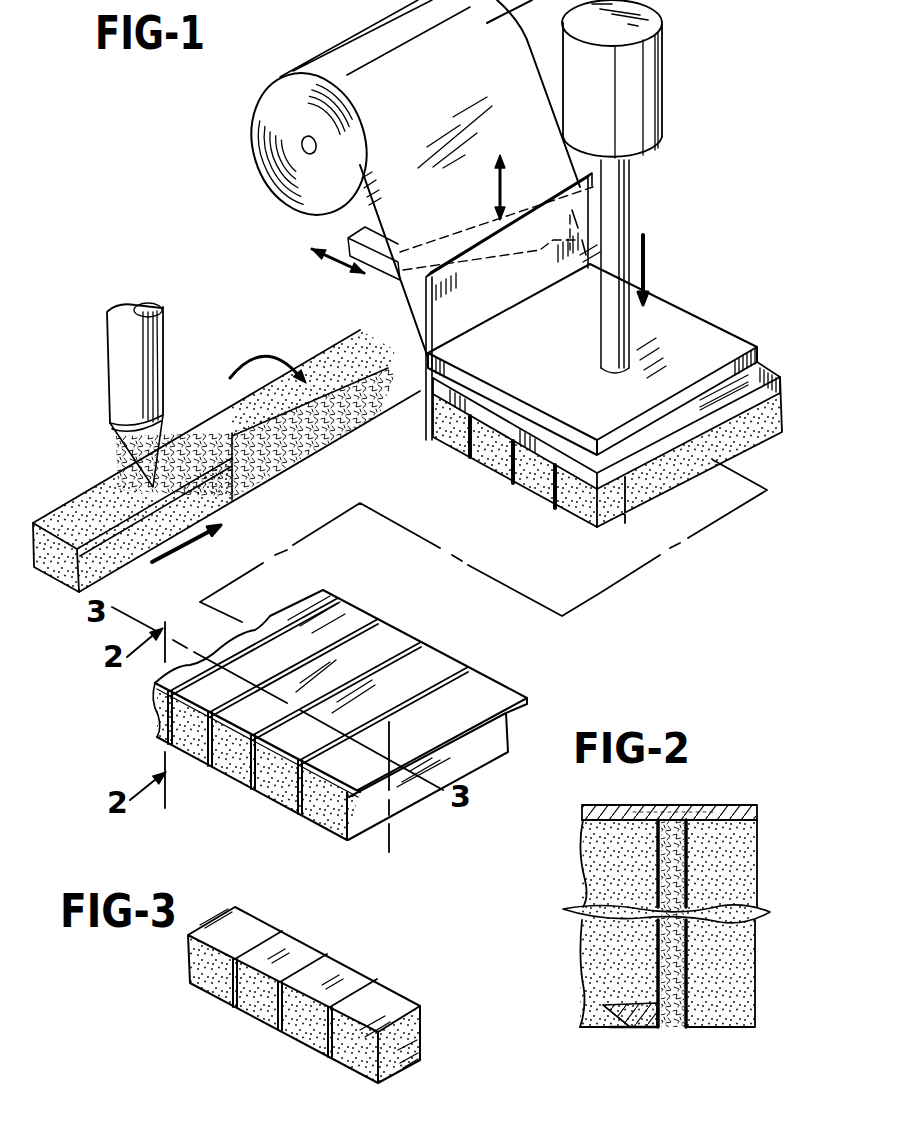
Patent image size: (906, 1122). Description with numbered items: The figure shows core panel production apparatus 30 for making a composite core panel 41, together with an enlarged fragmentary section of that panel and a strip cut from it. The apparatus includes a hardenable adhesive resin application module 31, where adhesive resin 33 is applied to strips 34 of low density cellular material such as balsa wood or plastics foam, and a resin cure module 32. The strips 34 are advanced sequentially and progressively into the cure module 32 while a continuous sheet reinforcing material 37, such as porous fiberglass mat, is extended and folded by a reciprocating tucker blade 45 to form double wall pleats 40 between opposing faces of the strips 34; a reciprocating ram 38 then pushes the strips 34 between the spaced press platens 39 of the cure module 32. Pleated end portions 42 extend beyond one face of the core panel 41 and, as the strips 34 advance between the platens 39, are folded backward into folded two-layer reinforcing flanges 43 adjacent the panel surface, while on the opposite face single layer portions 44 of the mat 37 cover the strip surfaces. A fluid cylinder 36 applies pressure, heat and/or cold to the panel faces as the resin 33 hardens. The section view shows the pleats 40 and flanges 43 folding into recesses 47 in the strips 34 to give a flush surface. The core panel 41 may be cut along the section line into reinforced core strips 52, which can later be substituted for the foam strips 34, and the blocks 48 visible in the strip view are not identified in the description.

In FIG. 1, the core panel production apparatus 30 is at (666, 261).
In FIG. 1, the hardenable adhesive resin application module 31 is at (100, 365).
In FIG. 1, the resin cure module 32 is at (606, 410).
In FIG. 1, the adhesive resin 33 is at (120, 457).
In FIG. 2, the adhesive resin 33 is at (680, 1030).
In FIG. 1, the strips 34 is at (92, 498).
In FIG. 2, the strips 34 is at (597, 888).
In FIG. 1, the fluid cylinder 36 is at (645, 84).
In FIG. 2, the continuous sheet reinforcing material 37 is at (585, 806).
In FIG. 1, the reciprocating ram 38 is at (380, 284).
In FIG. 1, the press platens 39 is at (677, 313).
In FIG. 1, the double wall pleats 40 is at (477, 420).
In FIG. 2, the double wall pleats 40 is at (688, 844).
In FIG. 2, the core panel 41 is at (661, 776).
In FIG. 1, the pleated end portions 42 is at (423, 447).
In FIG. 2, the folded two-layer reinforcing flanges 43 is at (627, 1030).
In FIG. 3, the folded two-layer reinforcing flanges 43 is at (320, 1053).
In FIG. 1, the single layer portions 44 is at (740, 397).
In FIG. 2, the single layer portions 44 is at (713, 808).
In FIG. 1, the reciprocating tucker blade 45 is at (578, 200).
In FIG. 2, the recesses 47 is at (603, 1007).
In FIG. 1, the blocks 48 is at (468, 678).
In FIG. 3, the blocks 48 is at (380, 997).
In FIG. 3, the reinforced core strips 52 is at (278, 998).